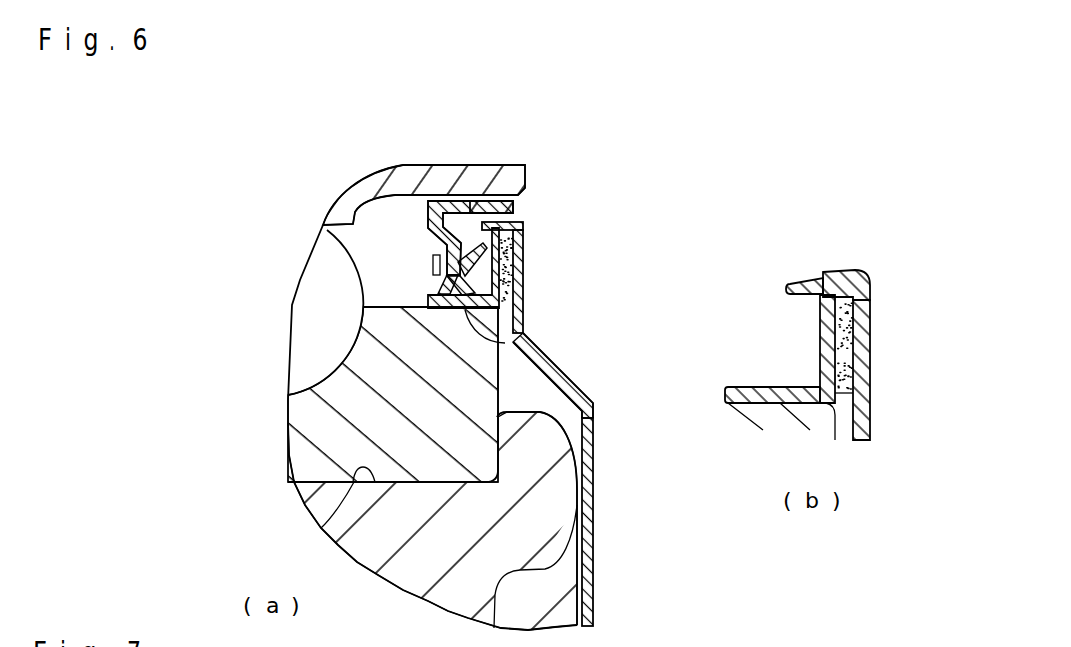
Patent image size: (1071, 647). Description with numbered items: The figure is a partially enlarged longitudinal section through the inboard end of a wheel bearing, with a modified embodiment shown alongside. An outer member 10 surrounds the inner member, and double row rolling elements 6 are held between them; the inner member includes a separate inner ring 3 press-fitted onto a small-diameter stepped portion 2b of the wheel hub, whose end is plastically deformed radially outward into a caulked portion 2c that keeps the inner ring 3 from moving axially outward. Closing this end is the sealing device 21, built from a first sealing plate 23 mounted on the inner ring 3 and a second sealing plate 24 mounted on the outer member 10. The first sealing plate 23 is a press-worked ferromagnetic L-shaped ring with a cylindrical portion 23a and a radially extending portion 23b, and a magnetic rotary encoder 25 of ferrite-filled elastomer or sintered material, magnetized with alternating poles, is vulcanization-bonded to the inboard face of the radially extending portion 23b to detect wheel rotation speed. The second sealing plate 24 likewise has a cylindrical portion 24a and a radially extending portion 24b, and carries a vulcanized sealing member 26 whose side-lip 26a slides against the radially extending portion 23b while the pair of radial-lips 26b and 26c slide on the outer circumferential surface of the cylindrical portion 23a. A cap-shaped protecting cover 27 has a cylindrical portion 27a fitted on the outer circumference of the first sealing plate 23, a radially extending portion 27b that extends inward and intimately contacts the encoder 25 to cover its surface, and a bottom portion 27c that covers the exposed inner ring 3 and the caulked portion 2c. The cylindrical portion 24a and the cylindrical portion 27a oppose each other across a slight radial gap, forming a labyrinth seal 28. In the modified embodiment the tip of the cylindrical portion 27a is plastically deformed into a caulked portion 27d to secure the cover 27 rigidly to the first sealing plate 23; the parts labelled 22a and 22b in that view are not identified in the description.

In FIG. 6a, the outer member 10 is at (380, 181).
In FIG. 6a, the rolling elements 6 is at (302, 357).
In FIG. 6a, the inner ring 3 is at (313, 434).
In FIG. 6b, the inner ring 3 is at (773, 428).
In FIG. 6a, the stepped portion 2b is at (321, 527).
In FIG. 6a, the caulked portion 2c is at (560, 500).
In FIG. 6a, the sealing device 21 is at (557, 198).
In FIG. 6a, the second sealing plate 24 is at (497, 133).
In FIG. 6a, the cylindrical portion 24a is at (477, 198).
In FIG. 6a, the radially extending portion 24b is at (427, 202).
In FIG. 6a, the sealing member 26 is at (242, 228).
In FIG. 6a, the side-lip 26a is at (437, 253).
In FIG. 6a, the radial-lip 26b is at (437, 278).
In FIG. 6a, the radial-lip 26c is at (437, 291).
In FIG. 6a, the first sealing plate 23 is at (598, 298).
In FIG. 6a, the cylindrical portion 23a is at (524, 335).
In FIG. 6a, the radially extending portion 23b is at (510, 290).
In FIG. 6a, the protecting cover 27 is at (676, 196).
In FIG. 6a, the cylindrical portion 27a is at (516, 219).
In FIG. 6b, the cylindrical portion 27a is at (856, 270).
In FIG. 6a, the radially extending portion 27b is at (524, 262).
In FIG. 6b, the radially extending portion 27b is at (868, 300).
In FIG. 6a, the bottom portion 27c is at (597, 440).
In FIG. 6b, the caulked portion 27d is at (806, 278).
In FIG. 6a, the magnetic rotary encoder 25 is at (516, 268).
In FIG. 6b, the magnetic rotary encoder 25 is at (858, 335).
In FIG. 6a, the labyrinth seal 28 is at (513, 216).
In FIG. 6b, the radial portion of seal case 22a is at (777, 387).
In FIG. 6b, the cylindrical portion of seal case 22b is at (820, 327).